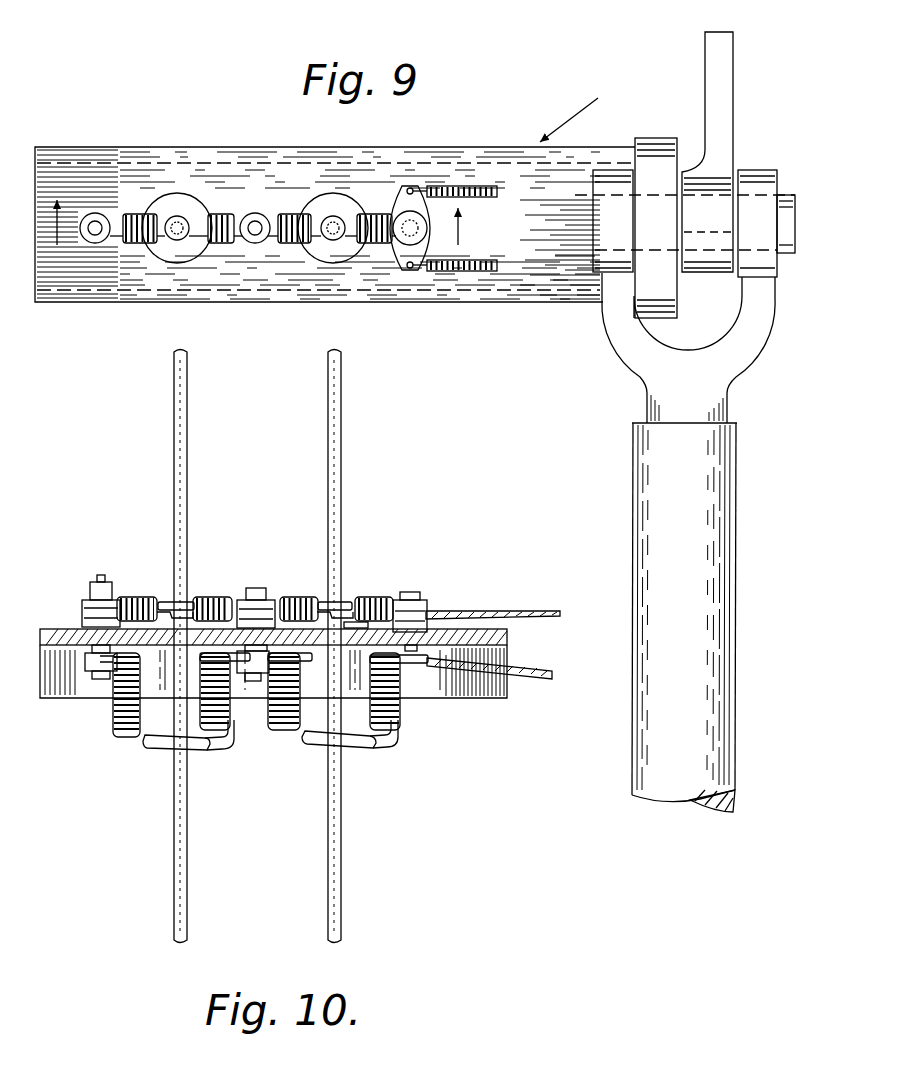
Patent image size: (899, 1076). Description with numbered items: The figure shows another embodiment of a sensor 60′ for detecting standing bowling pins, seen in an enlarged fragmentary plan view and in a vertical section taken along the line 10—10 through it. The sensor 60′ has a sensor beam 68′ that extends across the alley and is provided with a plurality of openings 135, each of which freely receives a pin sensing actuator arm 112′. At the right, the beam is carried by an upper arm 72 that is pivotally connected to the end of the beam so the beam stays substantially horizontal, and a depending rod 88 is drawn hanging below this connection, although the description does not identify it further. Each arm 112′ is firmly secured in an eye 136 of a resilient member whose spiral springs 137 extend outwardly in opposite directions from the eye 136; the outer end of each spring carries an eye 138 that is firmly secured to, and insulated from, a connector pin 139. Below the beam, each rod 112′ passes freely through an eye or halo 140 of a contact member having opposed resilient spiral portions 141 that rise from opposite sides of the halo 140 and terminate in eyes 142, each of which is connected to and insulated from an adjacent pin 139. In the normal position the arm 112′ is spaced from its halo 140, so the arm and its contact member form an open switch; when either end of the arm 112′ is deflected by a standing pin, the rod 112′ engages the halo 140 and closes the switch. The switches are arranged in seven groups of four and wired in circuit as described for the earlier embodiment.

In FIG. 9, the section line 10— 10 is at (277, 215).
In FIG. 9, the sensor 60′ is at (575, 107).
In FIG. 9, the sensor beam 68′ is at (572, 161).
In FIG. 10, the sensor beam 68′ is at (509, 637).
In FIG. 9, the upper arm 72 is at (733, 63).
In FIG. 9, the rod with clevis 88 is at (733, 681).
In FIG. 9, the pin sensing actuator arm 112′ is at (180, 219).
In FIG. 10, the pin sensing actuator arm 112′ is at (186, 459).
In FIG. 9, the opening 135 is at (173, 262).
In FIG. 10, the opening 135 is at (361, 640).
In FIG. 10, the eye 136 is at (187, 603).
In FIG. 9, the spiral spring 137 is at (139, 212).
In FIG. 10, the spiral spring 137 is at (140, 596).
In FIG. 10, the eye 138 is at (84, 603).
In FIG. 9, the connector pin 139 is at (95, 244).
In FIG. 10, the connector pin 139 is at (101, 576).
In FIG. 10, the eye or halo 140 is at (195, 755).
In FIG. 10, the resilient spiral portion 141 is at (113, 722).
In FIG. 10, the eye 142 is at (86, 652).